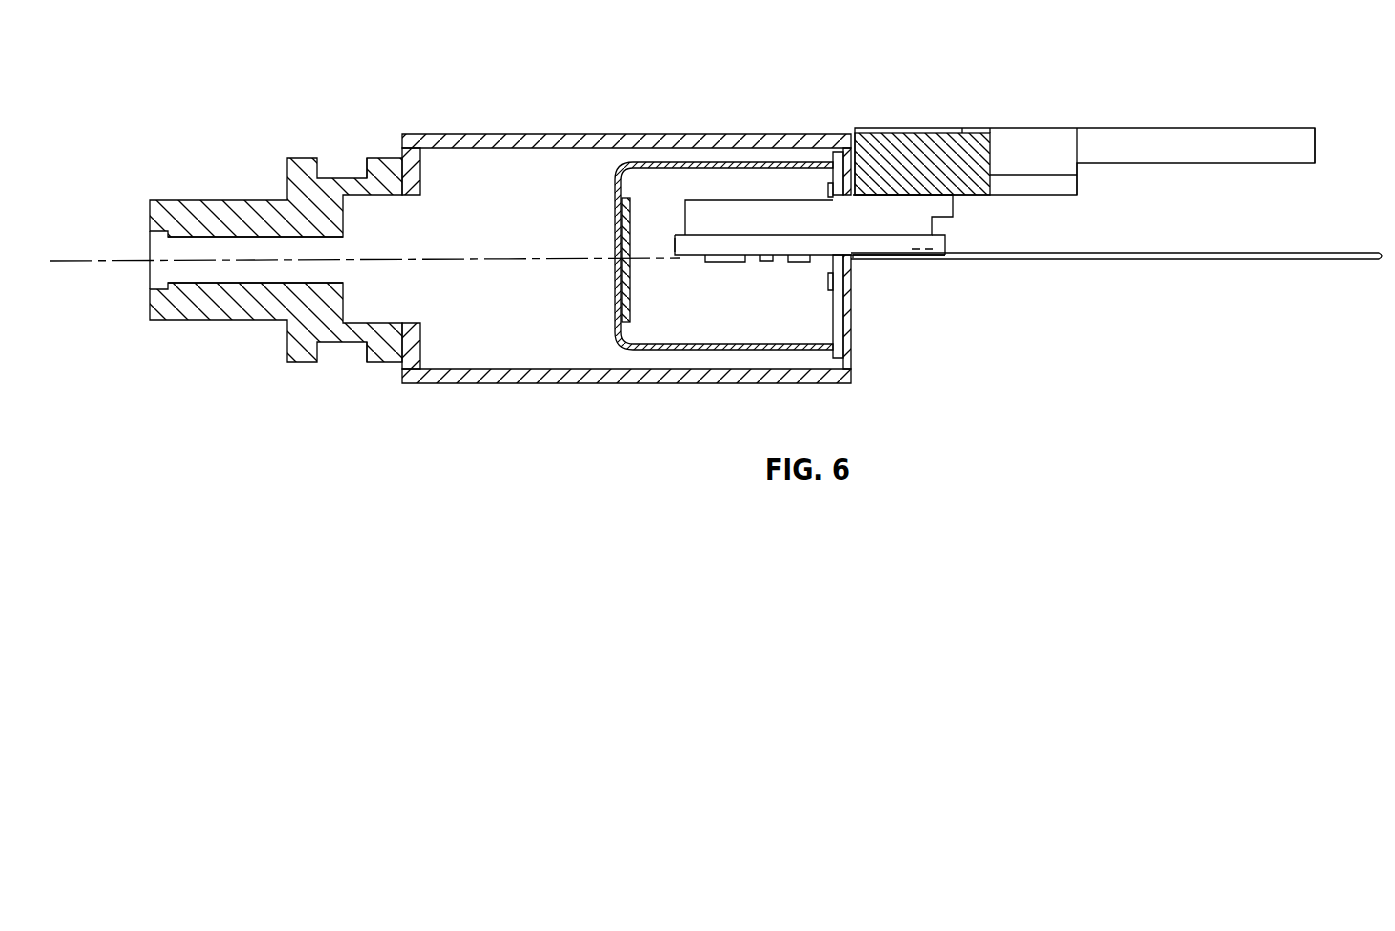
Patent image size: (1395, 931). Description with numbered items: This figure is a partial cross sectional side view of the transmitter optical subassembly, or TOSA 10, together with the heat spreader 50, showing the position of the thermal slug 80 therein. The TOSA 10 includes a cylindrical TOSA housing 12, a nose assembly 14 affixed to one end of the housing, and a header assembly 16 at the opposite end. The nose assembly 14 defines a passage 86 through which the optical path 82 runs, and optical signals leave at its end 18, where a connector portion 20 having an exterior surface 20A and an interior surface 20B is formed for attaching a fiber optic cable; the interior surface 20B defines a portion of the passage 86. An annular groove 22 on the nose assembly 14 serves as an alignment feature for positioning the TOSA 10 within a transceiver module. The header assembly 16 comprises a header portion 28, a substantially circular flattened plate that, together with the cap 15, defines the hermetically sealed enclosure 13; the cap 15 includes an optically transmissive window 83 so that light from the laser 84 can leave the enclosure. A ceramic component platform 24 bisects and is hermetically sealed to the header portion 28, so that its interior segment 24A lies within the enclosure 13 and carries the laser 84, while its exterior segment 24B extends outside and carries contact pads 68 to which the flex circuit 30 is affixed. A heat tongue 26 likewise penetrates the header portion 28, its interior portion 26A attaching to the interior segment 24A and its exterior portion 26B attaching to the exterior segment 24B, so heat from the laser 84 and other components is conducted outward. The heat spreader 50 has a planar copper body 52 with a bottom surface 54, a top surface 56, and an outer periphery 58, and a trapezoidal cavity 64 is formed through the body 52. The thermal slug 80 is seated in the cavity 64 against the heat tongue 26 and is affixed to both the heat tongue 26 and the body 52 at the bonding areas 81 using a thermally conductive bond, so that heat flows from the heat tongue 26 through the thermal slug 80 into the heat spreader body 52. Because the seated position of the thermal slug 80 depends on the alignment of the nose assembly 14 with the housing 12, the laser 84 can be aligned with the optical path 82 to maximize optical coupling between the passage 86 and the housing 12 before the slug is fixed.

The transmitter optical subassembly (TOSA) 10 is at (458, 90).
The TOSA housing 12 is at (460, 385).
The hermetically sealed enclosure 13 is at (693, 261).
The nose assembly 14 is at (238, 272).
The cap 15 is at (620, 348).
The header assembly 16 is at (882, 270).
The end 18 is at (150, 235).
The connector portion 20 is at (257, 264).
The exterior surface 20A is at (183, 198).
The interior surface 20B is at (248, 272).
The annular groove 22 is at (345, 347).
The component platform 24 is at (791, 310).
The interior segment 24A is at (686, 262).
The exterior segment 24B is at (863, 243).
The heat tongue 26 is at (824, 146).
The interior portion 26A is at (710, 215).
The exterior portion 26B is at (927, 207).
The header portion 28 is at (828, 182).
The flex circuit 30 is at (1267, 251).
The heat spreader 50 is at (1096, 150).
The body 52 is at (1252, 138).
The bottom surface 54 is at (1108, 167).
The top surface 56 is at (1068, 126).
The outer periphery 58 is at (1317, 145).
The cavity 64 is at (975, 133).
The contact pads 68 is at (928, 260).
The thermal slug 80 is at (882, 175).
The bonding areas 81 is at (873, 200).
The optical path 82 is at (432, 262).
The optically transmissive window 83 is at (632, 225).
The laser 84 is at (725, 262).
The passage 86 is at (195, 272).